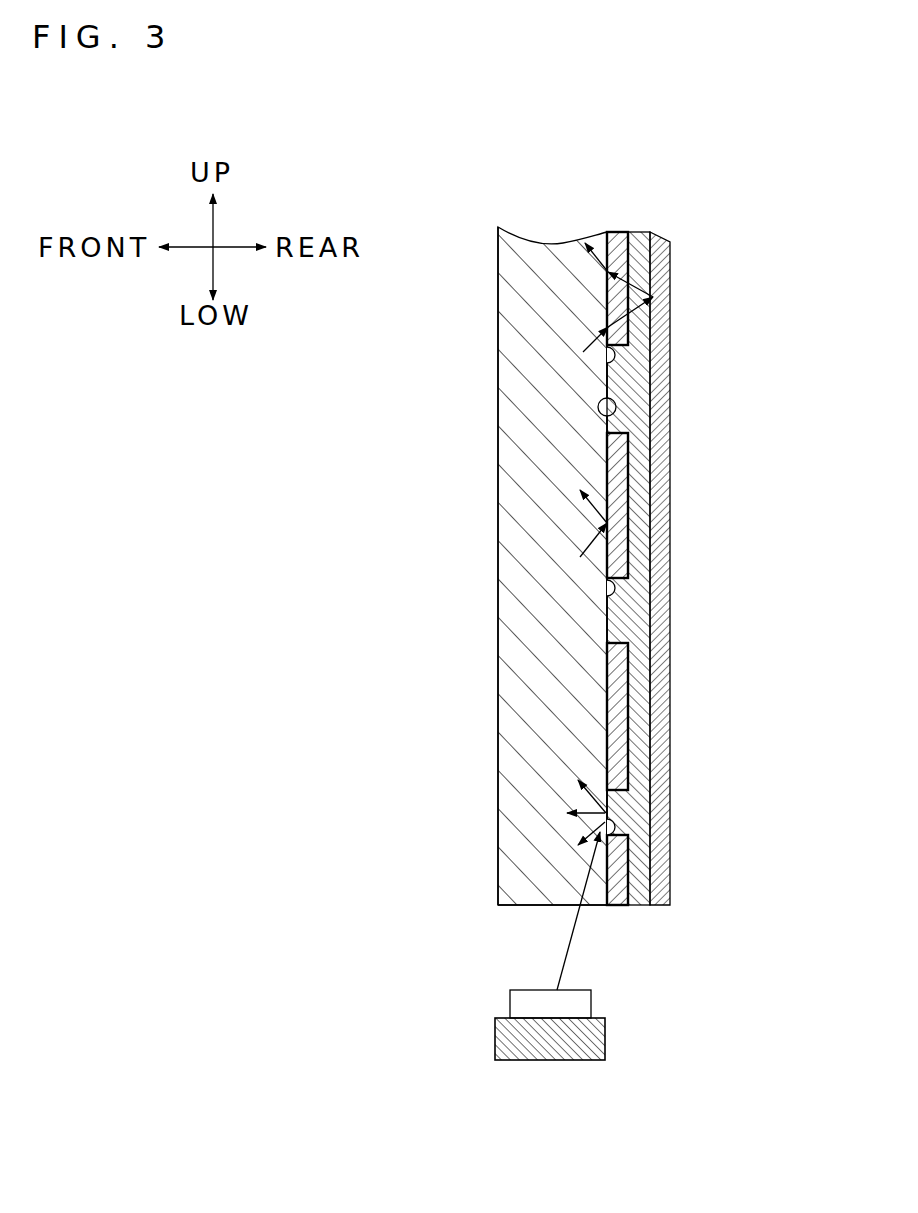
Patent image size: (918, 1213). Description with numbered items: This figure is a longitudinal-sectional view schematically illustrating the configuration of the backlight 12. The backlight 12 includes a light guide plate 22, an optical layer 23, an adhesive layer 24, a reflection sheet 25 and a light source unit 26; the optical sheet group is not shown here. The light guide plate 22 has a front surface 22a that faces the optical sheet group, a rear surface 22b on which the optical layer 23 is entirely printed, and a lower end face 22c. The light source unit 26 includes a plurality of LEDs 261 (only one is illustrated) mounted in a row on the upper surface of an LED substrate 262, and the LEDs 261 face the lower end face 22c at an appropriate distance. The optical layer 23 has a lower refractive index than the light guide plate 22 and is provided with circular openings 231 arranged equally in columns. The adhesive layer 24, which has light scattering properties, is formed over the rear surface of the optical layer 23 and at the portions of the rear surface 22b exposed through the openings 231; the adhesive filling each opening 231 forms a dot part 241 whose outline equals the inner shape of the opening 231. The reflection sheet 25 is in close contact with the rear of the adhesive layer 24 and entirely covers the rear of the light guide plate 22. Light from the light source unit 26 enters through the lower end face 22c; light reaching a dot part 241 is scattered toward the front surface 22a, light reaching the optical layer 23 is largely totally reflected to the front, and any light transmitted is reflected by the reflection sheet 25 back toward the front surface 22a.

The backlight 12 is at (473, 188).
The light guide plate 22 is at (537, 231).
The front surface of the light guide plate 22a is at (498, 520).
The rear surface of the light guide plate 22b is at (604, 417).
The lower end face of the light guide plate 22c is at (530, 905).
The optical layer 23 is at (611, 231).
The opening 231 is at (607, 360).
The adhesive layer 24 is at (640, 231).
The dot part 241 is at (622, 400).
The reflection sheet 25 is at (672, 240).
The light source unit 26 is at (643, 946).
The LED 261 is at (583, 1003).
The LED substrate 262 is at (598, 1035).